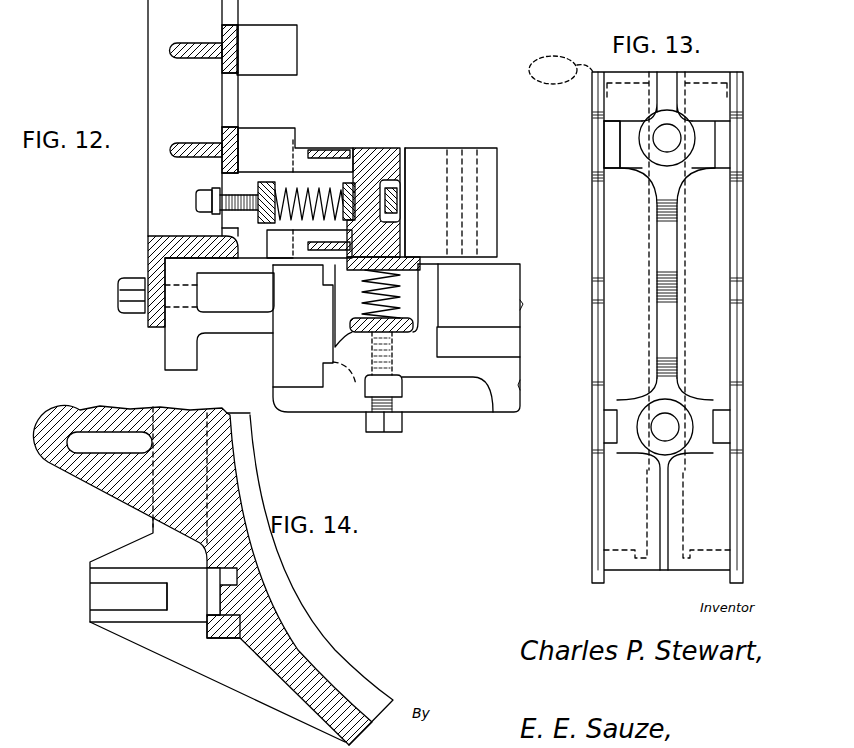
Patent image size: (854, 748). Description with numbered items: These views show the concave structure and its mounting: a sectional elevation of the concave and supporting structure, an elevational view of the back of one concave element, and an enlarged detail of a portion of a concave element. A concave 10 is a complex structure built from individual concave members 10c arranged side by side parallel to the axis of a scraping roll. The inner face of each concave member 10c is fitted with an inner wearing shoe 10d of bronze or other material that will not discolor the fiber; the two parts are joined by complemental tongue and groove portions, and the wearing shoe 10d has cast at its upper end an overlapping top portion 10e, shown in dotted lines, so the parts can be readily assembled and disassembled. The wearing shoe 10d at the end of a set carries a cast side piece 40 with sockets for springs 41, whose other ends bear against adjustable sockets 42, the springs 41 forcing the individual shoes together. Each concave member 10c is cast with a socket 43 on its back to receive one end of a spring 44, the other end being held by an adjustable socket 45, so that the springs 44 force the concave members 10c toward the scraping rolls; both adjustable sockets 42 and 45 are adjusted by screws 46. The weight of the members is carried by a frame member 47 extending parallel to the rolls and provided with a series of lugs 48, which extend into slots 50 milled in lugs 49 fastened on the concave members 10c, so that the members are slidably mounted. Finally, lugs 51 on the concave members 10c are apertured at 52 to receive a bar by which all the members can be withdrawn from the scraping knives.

In FIG. 12, the concave 10 is at (434, 1).
In FIG. 12, the concave member 10c is at (377, 155).
In FIG. 13, the concave member 10c is at (667, 327).
In FIG. 12, the inner wearing shoe 10d is at (407, 187).
In FIG. 13, the overlapping top portion 10e is at (561, 70).
In FIG. 12, the side piece 40 is at (419, 257).
In FIG. 12, the spring 41 is at (403, 293).
In FIG. 12, the adjustable socket 42 is at (350, 324).
In FIG. 13, the socket 43 is at (655, 450).
In FIG. 14, the socket 43 is at (207, 633).
In FIG. 12, the spring 44 is at (277, 224).
In FIG. 12, the adjustable socket 45 is at (222, 182).
In FIG. 12, the screw 46 is at (390, 421).
In FIG. 12, the frame member 47 is at (178, 163).
In FIG. 12, the lug 48 is at (267, 50).
In FIG. 12, the lug 49 is at (302, 152).
In FIG. 14, the lug 49 is at (177, 612).
In FIG. 13, the slot 50 is at (601, 142).
In FIG. 14, the slot 50 is at (102, 593).
In FIG. 13, the lug 51 is at (672, 260).
In FIG. 14, the lug 51 is at (62, 417).
In FIG. 14, the aperture 52 is at (96, 441).